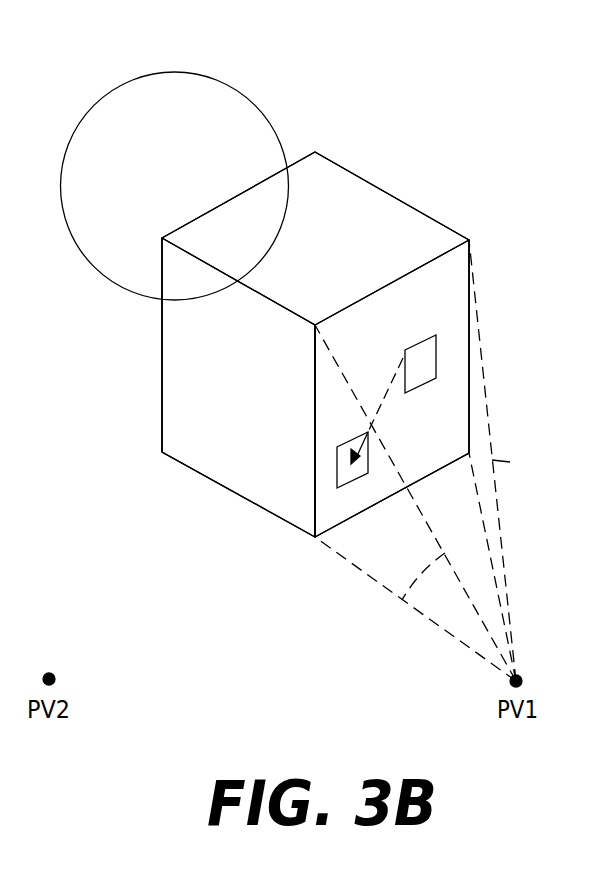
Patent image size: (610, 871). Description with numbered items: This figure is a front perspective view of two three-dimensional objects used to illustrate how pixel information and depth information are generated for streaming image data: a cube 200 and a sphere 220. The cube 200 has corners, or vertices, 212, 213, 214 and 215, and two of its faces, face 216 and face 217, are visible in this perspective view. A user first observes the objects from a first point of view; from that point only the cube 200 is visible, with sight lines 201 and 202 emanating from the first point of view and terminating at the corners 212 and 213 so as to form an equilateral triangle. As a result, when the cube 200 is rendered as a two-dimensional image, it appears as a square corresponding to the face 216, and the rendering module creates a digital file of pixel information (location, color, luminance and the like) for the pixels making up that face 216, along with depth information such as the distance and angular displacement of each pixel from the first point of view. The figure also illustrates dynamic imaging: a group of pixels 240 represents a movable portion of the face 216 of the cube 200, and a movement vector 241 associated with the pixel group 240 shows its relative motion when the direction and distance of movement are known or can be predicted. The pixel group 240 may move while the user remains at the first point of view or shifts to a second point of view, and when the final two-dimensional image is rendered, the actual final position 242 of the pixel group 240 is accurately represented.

The cube 200 is at (397, 225).
The sight line 201 is at (520, 468).
The sight line 202 is at (400, 605).
The corner 212 is at (472, 239).
The corner 213 is at (313, 327).
The corner 214 is at (172, 238).
The corner 215 is at (315, 152).
The face 216 is at (453, 357).
The face 217 is at (190, 386).
The sphere 220 is at (210, 122).
The pixel group 240 is at (422, 353).
The movement vector 241 is at (388, 390).
The final position 242 is at (347, 480).